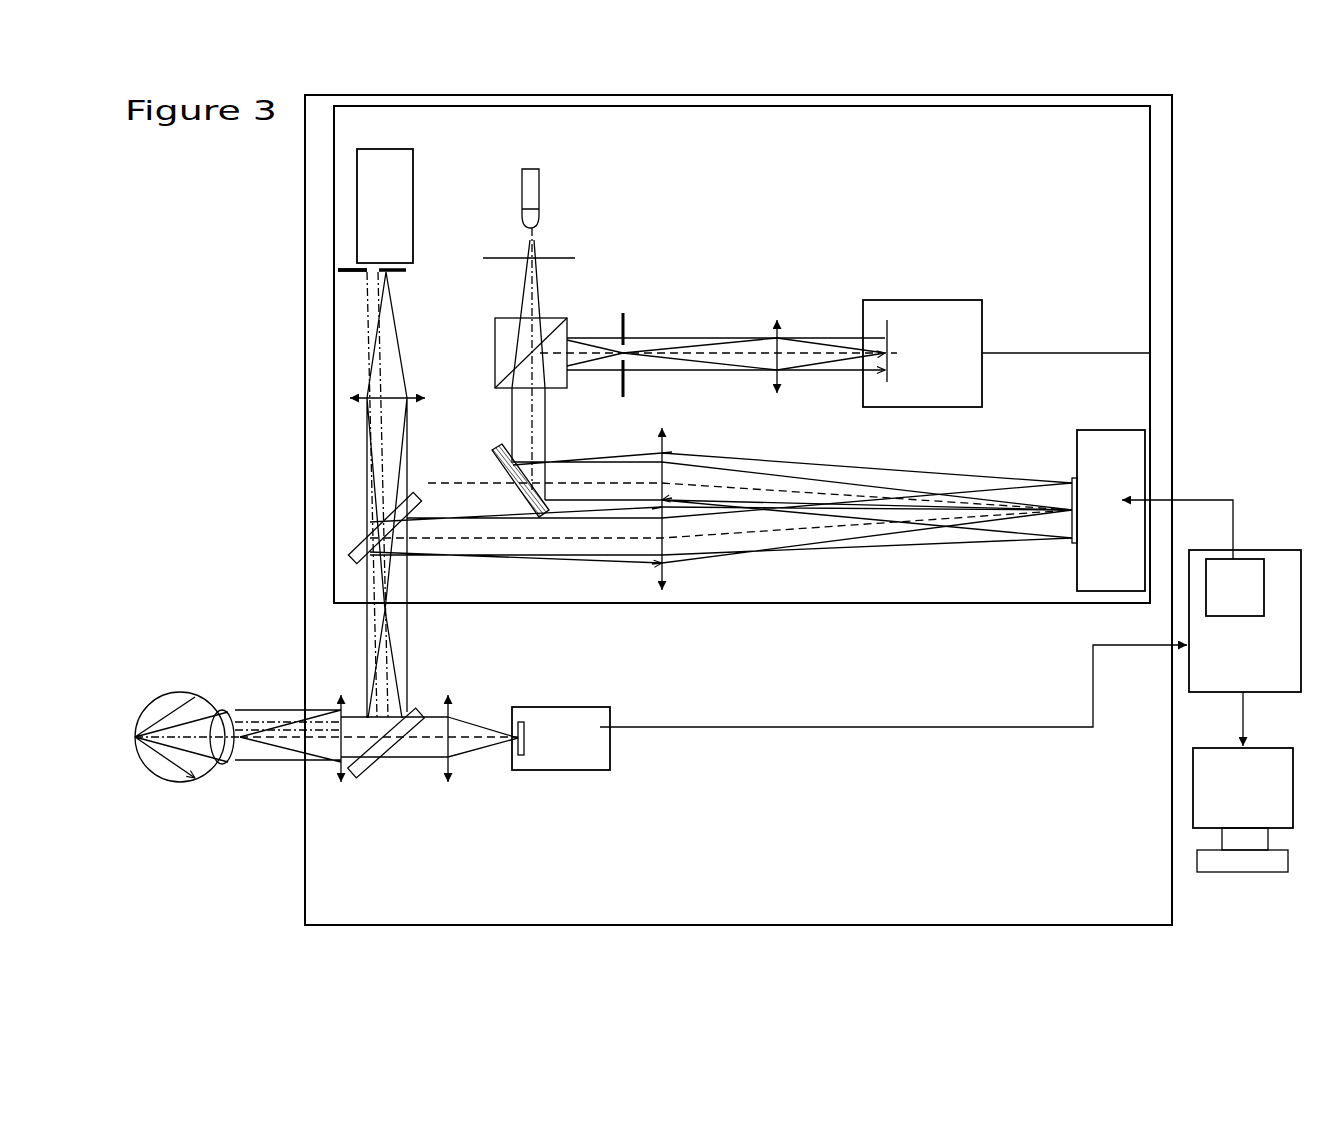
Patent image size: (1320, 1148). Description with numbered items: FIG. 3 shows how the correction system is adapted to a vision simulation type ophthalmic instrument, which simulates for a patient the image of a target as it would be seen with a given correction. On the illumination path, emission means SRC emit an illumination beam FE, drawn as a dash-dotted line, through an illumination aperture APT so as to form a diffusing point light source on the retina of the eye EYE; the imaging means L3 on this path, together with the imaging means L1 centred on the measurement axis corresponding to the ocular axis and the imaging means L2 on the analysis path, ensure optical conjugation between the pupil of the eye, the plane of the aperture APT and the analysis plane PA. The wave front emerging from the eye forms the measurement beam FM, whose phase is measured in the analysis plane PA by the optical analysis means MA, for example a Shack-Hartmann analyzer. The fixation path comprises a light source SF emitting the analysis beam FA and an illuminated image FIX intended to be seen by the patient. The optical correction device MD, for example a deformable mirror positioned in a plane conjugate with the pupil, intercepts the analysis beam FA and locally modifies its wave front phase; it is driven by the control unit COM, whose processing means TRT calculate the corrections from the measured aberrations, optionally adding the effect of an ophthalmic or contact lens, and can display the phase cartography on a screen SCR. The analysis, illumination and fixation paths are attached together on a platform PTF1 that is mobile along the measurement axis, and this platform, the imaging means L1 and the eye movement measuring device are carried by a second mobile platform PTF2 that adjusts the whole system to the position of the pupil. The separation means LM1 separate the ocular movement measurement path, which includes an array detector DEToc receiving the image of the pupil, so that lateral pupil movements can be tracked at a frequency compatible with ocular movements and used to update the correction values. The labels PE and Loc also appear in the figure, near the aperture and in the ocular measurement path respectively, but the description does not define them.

The emission means SRC is at (400, 175).
The light source SF is at (537, 170).
The illuminated image FIX is at (563, 258).
The illumination aperture APT is at (357, 268).
The entrance pupil plane PE is at (338, 270).
The illumination beam FE is at (366, 338).
The imaging means on the illumination path L3 is at (352, 398).
The imaging means on the analysis path L2 is at (777, 320).
The analysis plane PA is at (888, 322).
The optical analysis means MA is at (967, 380).
The analysis beam FA is at (536, 438).
The optical correction device MD is at (1108, 470).
The platform PTF1 is at (1113, 200).
The second mobile platform PTF2 is at (343, 843).
The control unit COM is at (1222, 580).
The processing means TRT is at (1280, 590).
The screen SCR is at (1208, 778).
The array detector DEToc is at (523, 753).
The ocular lens Loc is at (450, 784).
The separation means LM1 is at (364, 776).
The imaging means L1 is at (330, 767).
The measurement beam FM is at (304, 707).
The eye EYE is at (160, 772).